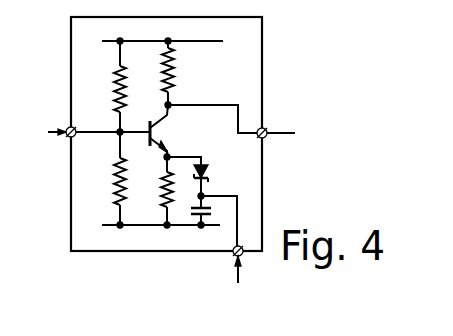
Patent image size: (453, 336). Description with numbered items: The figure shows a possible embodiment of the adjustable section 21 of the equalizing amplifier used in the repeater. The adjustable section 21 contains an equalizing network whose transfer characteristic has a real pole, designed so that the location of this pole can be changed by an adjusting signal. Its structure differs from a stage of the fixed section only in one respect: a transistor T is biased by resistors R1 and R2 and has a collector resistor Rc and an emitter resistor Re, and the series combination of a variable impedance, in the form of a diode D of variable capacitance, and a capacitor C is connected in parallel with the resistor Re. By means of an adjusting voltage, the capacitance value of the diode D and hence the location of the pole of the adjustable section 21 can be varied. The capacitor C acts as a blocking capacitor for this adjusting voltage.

The adjustable section 21 is at (70, 79).
The resistor R1 is at (118, 107).
The resistor R2 is at (117, 198).
The collector resistor Rc is at (174, 81).
The resistor Re is at (163, 200).
The transistor T is at (148, 127).
The diode D is at (209, 178).
The capacitor C is at (212, 211).